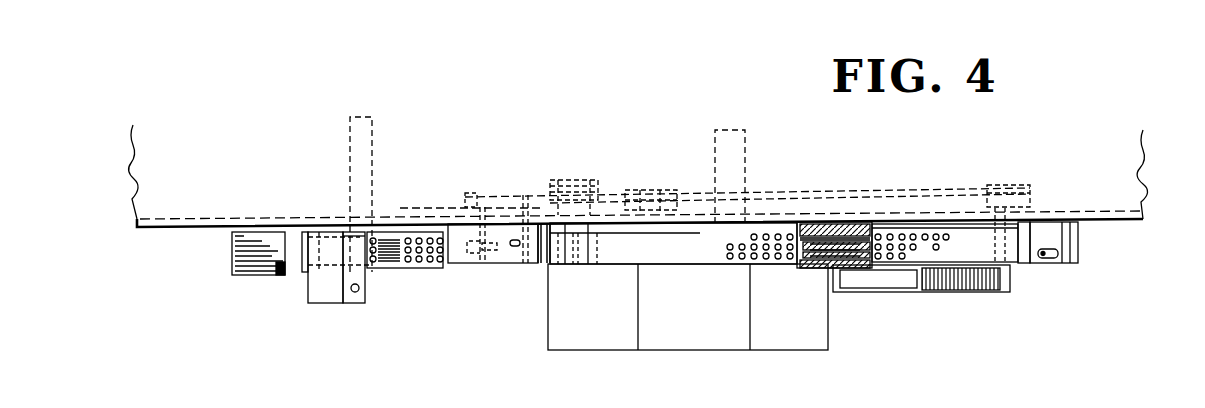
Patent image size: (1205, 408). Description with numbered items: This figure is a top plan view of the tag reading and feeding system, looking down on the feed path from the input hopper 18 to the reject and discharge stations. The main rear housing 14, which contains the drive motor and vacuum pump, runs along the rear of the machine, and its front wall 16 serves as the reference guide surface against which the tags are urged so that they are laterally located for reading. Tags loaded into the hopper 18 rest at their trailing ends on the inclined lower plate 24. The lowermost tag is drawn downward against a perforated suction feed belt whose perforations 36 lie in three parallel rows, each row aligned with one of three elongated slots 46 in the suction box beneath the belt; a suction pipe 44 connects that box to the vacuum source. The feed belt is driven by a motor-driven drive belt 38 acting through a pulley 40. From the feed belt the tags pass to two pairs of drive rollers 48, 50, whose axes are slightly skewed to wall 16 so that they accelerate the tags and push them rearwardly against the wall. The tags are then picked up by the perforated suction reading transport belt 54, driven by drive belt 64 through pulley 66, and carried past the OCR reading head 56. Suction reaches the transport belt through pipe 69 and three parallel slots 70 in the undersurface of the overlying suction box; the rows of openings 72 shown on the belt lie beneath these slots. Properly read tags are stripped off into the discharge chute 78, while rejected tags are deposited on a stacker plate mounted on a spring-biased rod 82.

The main rear housing 14 is at (256, 176).
The front wall 16 is at (172, 232).
The input hopper 18 is at (326, 305).
The lower plate 24 is at (272, 273).
The belt perforations 36 is at (412, 270).
The drive belt 38 is at (455, 203).
The pulley 40 is at (410, 204).
The suction pipe 44 is at (372, 150).
The elongated slots 46 is at (401, 268).
The drive rollers 48 is at (473, 262).
The drive rollers 50 is at (515, 247).
The suction reading transport belt 54 is at (673, 245).
The OCR reading head 56 is at (684, 324).
The drive belt 64 is at (866, 190).
The pulley 66 is at (1020, 190).
The pipe 69 is at (742, 162).
The elongated slots 70 is at (847, 245).
The contact pins 72 is at (925, 235).
The discharge chute 78 is at (972, 285).
The rod 82 is at (1050, 259).